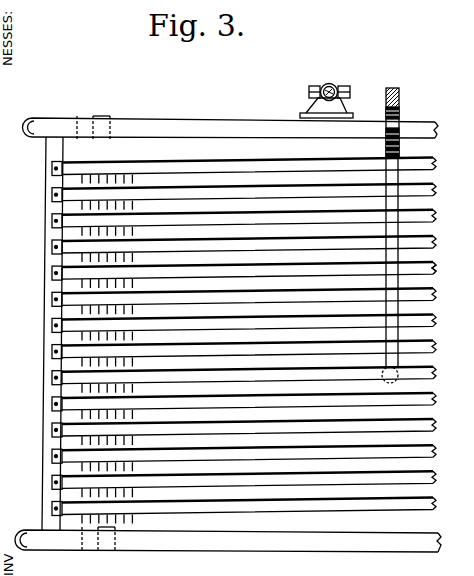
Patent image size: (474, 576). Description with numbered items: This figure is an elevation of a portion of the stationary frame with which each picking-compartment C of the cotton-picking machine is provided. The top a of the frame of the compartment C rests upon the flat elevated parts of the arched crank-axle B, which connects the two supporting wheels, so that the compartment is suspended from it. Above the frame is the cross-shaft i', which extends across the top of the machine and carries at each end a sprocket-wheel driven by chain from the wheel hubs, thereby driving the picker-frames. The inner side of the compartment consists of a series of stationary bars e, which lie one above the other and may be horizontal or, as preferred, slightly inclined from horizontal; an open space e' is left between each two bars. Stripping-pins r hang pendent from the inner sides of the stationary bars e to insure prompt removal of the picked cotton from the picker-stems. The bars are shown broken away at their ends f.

The picking-compartment C is at (216, 130).
The top of the frame a is at (146, 135).
The cross-shaft i' is at (326, 88).
The crank-axle B is at (399, 91).
The broken tube end f is at (458, 262).
The stationary bars e is at (249, 337).
The open space e' is at (254, 471).
The stripping-pins r is at (134, 437).